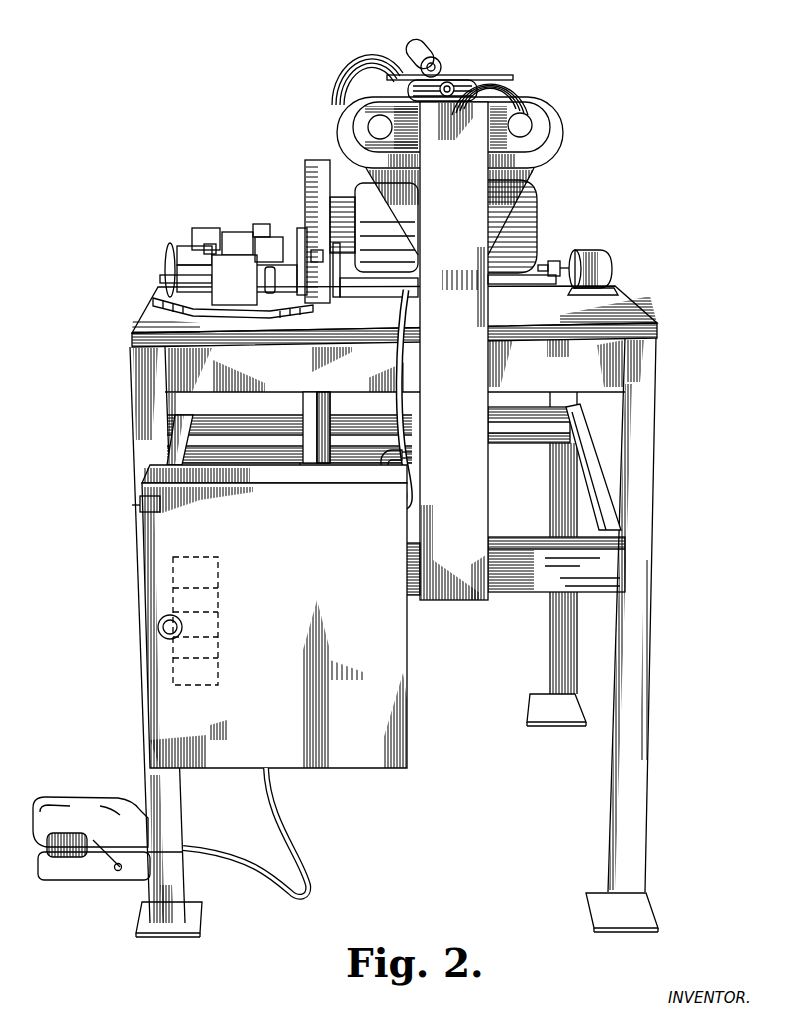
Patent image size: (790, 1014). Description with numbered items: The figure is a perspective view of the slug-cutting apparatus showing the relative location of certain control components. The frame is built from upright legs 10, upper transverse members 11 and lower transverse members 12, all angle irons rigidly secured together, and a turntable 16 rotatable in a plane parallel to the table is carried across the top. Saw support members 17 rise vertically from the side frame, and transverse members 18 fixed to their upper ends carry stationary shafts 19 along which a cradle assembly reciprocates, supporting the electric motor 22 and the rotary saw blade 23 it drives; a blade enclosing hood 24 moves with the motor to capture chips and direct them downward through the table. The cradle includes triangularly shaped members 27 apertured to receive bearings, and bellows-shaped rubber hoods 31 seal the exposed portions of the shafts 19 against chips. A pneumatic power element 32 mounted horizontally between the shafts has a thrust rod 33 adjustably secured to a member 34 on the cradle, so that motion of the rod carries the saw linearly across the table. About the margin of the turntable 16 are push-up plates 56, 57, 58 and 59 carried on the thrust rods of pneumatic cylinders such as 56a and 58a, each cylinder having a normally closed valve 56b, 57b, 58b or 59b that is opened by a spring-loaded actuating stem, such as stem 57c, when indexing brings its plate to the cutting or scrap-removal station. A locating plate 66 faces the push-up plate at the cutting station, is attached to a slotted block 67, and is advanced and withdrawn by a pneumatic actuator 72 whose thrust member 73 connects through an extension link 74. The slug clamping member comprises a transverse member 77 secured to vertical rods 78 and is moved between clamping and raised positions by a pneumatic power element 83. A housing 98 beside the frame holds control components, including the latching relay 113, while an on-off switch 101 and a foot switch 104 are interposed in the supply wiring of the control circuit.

The upright legs 10 is at (148, 447).
The upper transverse members 11 is at (270, 373).
The lower transverse members 12 is at (249, 413).
The turntable 16 is at (158, 293).
The saw support members 17 is at (468, 195).
The transverse members 18 is at (522, 148).
The stationary shafts 19 is at (376, 125).
The electric motor 22 is at (520, 218).
The rotary saw blade 23 is at (317, 250).
The blade enclosing hood 24 is at (315, 182).
The triangularly shaped members 27 is at (402, 195).
The bellows-shaped rubber hoods 31 is at (340, 116).
The pneumatic power element 32 is at (413, 45).
The thrust rod 33 is at (440, 63).
The member 34 is at (495, 66).
The push-up plate 56 is at (175, 278).
The pneumatically operated cylinder 56a is at (197, 250).
The normally closed valve 56b is at (210, 248).
The push-up plate 57 is at (238, 276).
The normally closed valve 57b is at (273, 237).
The carriage base plate 57c is at (272, 312).
The push-up plate 58 is at (275, 298).
The pneumatically operated cylinder 58a is at (297, 263).
The normally closed valve 58b is at (260, 224).
The push-up plate 59 is at (240, 232).
The normally closed valve 59b is at (203, 233).
The locating plate 66 is at (352, 282).
The slotted block 67 is at (408, 292).
The pneumatic actuator 72 is at (600, 252).
The thrust member 73 is at (556, 260).
The extension link 74 is at (515, 284).
The transverse member 77 is at (336, 297).
The vertical rods 78 is at (315, 412).
The pneumatic power element 83 is at (305, 430).
The housing 98 is at (328, 555).
The on-off switch 101 is at (160, 505).
The foot switch 104 is at (60, 807).
The latching relay 113 is at (222, 646).